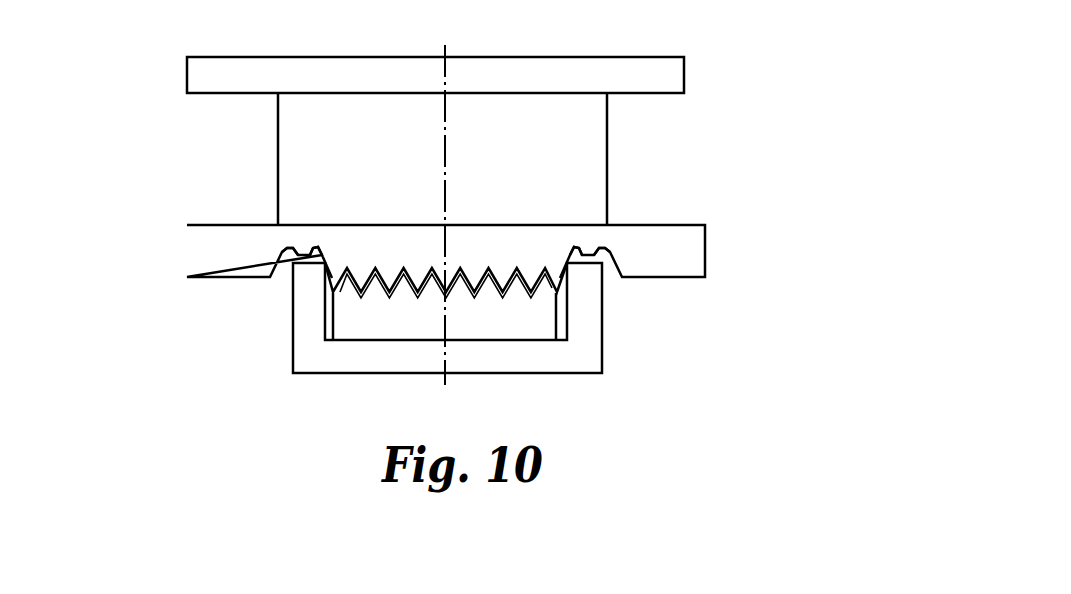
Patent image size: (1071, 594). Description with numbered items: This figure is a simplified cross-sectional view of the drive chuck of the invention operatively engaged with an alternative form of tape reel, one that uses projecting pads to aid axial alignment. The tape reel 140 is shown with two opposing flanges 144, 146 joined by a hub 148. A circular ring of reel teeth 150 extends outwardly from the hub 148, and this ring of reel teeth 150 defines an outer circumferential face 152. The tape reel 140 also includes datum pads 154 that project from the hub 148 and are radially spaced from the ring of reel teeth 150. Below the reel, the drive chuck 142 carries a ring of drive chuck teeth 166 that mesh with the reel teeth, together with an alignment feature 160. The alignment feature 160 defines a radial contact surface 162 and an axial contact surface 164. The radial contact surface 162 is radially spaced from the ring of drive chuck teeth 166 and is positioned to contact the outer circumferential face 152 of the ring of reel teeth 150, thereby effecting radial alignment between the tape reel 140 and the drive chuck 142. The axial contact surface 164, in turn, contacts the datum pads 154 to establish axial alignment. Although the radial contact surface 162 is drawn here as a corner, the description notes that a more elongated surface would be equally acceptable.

The tape reel 140 is at (182, 148).
The drive chuck 142 is at (256, 350).
The flange 144 is at (650, 72).
The flange 146 is at (697, 250).
The hub 148 is at (593, 147).
The ring of reel teeth 150 is at (503, 268).
The outer circumferential face 152 is at (313, 252).
The datum pads 154 is at (283, 252).
The alignment feature 160 is at (598, 349).
The radial contact surface 162 is at (563, 263).
The axial contact surface 164 is at (580, 250).
The ring of drive chuck teeth 166 is at (375, 298).